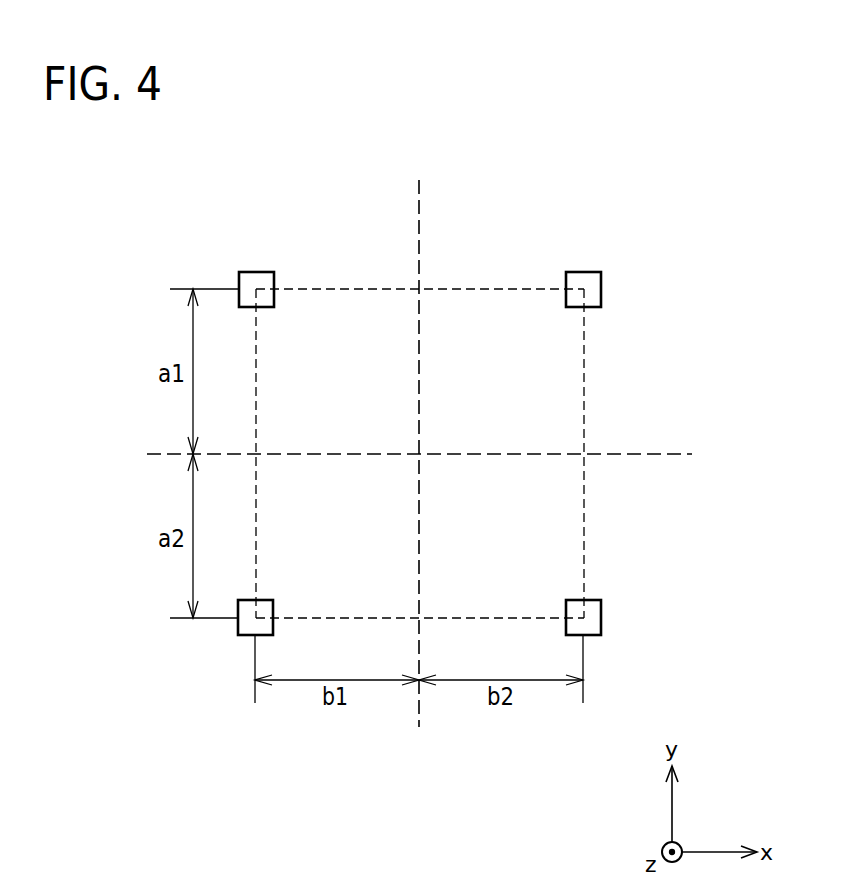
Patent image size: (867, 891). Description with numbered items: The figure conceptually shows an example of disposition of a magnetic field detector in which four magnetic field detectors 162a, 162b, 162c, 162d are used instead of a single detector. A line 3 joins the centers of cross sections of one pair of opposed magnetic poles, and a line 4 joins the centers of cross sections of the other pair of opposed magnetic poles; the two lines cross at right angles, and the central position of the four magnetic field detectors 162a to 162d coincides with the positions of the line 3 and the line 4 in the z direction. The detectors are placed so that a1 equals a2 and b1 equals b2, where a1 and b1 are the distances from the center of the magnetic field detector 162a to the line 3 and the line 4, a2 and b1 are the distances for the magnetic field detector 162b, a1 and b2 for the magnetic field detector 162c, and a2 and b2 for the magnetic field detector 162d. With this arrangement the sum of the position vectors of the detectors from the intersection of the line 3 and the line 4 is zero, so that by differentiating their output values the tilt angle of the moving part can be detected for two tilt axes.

The magnetic field detector 162a is at (256, 272).
The magnetic field detector 162b is at (243, 635).
The magnetic field detector 162c is at (583, 272).
The magnetic field detector 162d is at (596, 635).
The line 3 is at (665, 452).
The line 4 is at (419, 205).